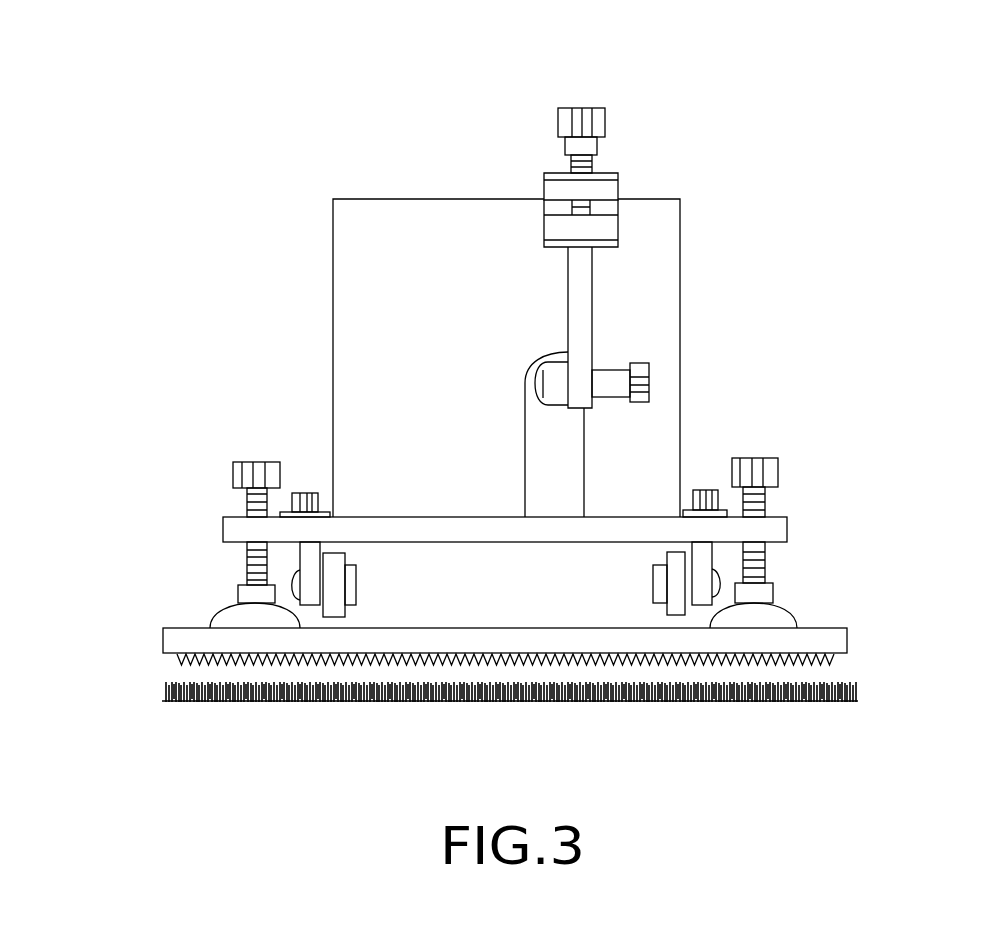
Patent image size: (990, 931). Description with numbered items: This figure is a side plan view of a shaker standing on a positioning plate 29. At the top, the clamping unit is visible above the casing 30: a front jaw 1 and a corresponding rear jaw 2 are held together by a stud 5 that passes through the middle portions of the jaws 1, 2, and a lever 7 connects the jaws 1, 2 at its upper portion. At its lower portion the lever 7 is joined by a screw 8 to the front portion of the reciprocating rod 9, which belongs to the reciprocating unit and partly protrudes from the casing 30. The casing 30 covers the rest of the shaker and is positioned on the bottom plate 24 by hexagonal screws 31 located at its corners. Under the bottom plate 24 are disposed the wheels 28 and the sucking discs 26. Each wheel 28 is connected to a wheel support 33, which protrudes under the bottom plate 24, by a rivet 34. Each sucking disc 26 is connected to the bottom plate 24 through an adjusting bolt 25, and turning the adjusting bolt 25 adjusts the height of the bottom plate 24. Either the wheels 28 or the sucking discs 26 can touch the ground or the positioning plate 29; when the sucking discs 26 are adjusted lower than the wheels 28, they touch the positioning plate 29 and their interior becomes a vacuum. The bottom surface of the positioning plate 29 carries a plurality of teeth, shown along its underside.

The front jaw 1 is at (545, 173).
The rear jaw 2 is at (553, 225).
The stud 5 is at (562, 110).
The lever 7 is at (578, 289).
The screw 8 is at (626, 403).
The reciprocating rod 9 is at (538, 378).
The bottom plate 24 is at (788, 520).
The adjusting bolt 25 is at (773, 457).
The sucking disc 26 is at (793, 610).
The wheel 28 is at (340, 558).
The positioning plate 29 is at (162, 634).
The casing 30 is at (668, 197).
The hexagonal screw 31 is at (697, 487).
The wheel support 33 is at (705, 558).
The rivet 34 is at (358, 595).